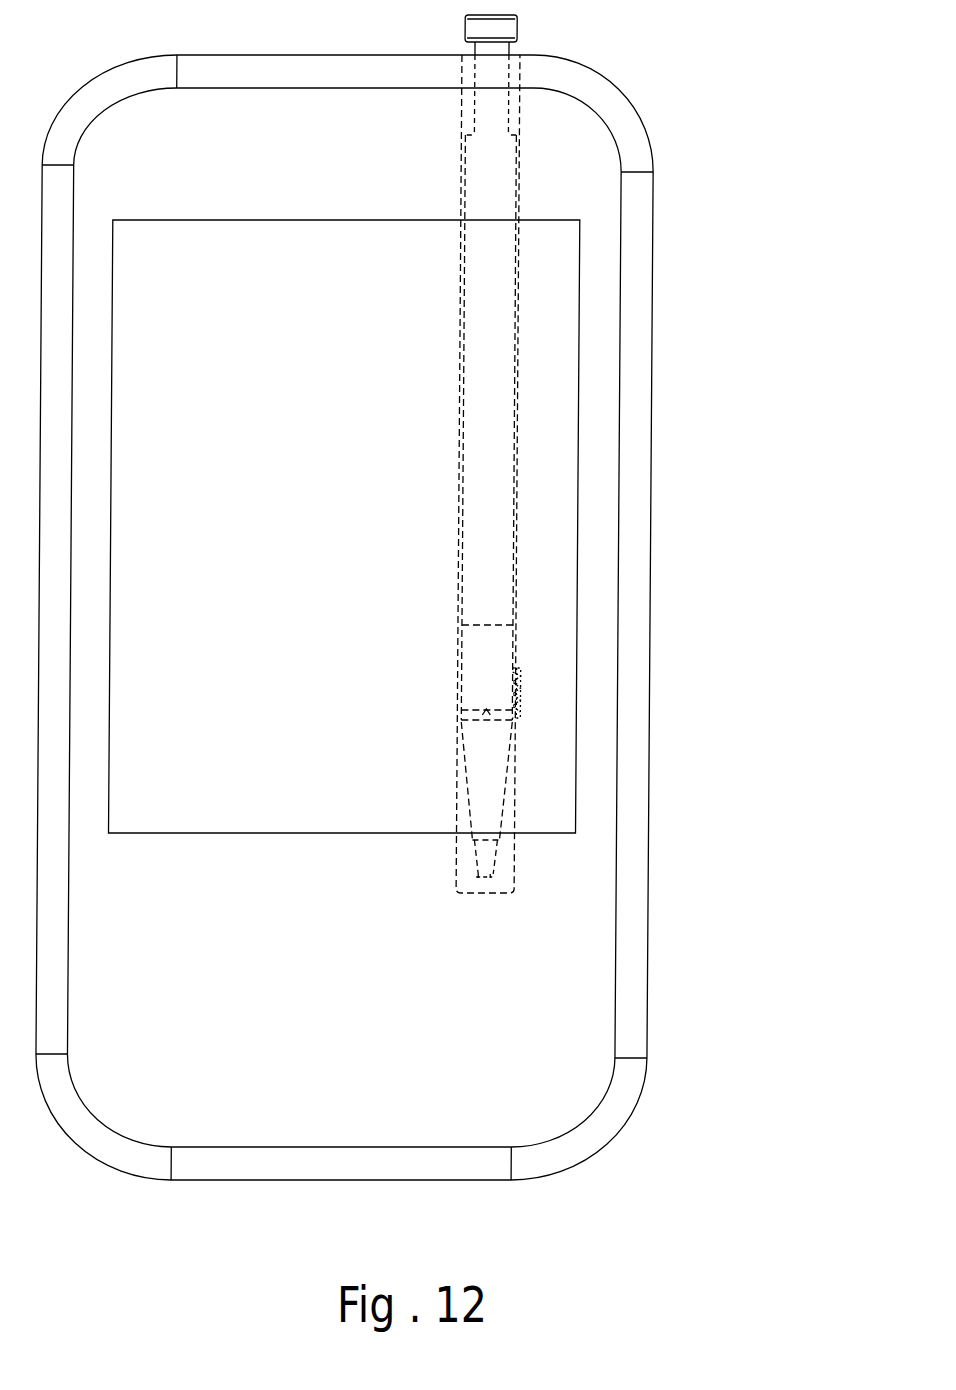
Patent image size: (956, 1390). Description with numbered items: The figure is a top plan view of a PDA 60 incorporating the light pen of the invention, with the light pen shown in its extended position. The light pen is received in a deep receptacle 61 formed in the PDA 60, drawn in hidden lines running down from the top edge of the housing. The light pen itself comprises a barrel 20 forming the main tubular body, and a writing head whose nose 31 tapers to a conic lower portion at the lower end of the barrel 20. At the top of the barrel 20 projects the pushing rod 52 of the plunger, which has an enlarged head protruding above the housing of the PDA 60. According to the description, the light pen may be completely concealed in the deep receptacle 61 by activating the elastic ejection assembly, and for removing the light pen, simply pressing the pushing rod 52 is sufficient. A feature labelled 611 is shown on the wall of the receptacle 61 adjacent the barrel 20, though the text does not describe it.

The barrel 20 is at (480, 422).
The nose 31 is at (470, 763).
The pushing rod 52 is at (505, 26).
The PDA 60 is at (597, 950).
The deep receptacle 61 is at (503, 862).
The engaging portion 611 is at (528, 695).